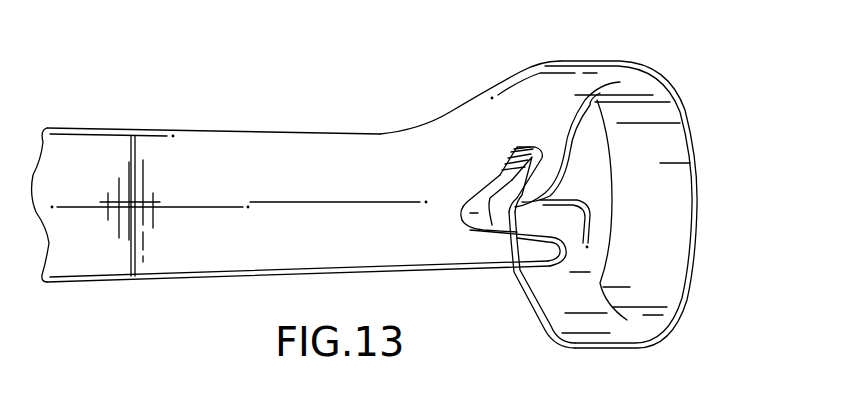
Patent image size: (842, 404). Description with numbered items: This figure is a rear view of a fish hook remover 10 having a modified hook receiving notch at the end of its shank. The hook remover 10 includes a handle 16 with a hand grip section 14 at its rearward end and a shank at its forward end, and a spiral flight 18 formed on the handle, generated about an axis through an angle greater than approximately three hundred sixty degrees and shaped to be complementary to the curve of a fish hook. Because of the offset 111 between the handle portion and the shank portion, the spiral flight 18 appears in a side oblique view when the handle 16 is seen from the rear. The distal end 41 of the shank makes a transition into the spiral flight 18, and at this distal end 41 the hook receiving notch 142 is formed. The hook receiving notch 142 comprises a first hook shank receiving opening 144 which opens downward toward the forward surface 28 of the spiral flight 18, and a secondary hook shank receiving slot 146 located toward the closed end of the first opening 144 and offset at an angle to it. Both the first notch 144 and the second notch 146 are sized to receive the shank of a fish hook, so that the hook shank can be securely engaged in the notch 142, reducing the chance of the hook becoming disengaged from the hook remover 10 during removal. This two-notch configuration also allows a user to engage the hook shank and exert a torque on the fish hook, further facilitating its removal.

The hook remover 10 is at (135, 69).
The hand grip section 14 is at (306, 132).
The handle 16 is at (82, 285).
The spiral flight 18 is at (674, 86).
The forward surface 28 is at (657, 242).
The distal end 41 is at (463, 107).
The offset 111 is at (132, 283).
The hook receiving notch 142 is at (478, 231).
The first hook shank receiving opening 144 is at (520, 224).
The secondary hook shank receiving slot 146 is at (492, 175).